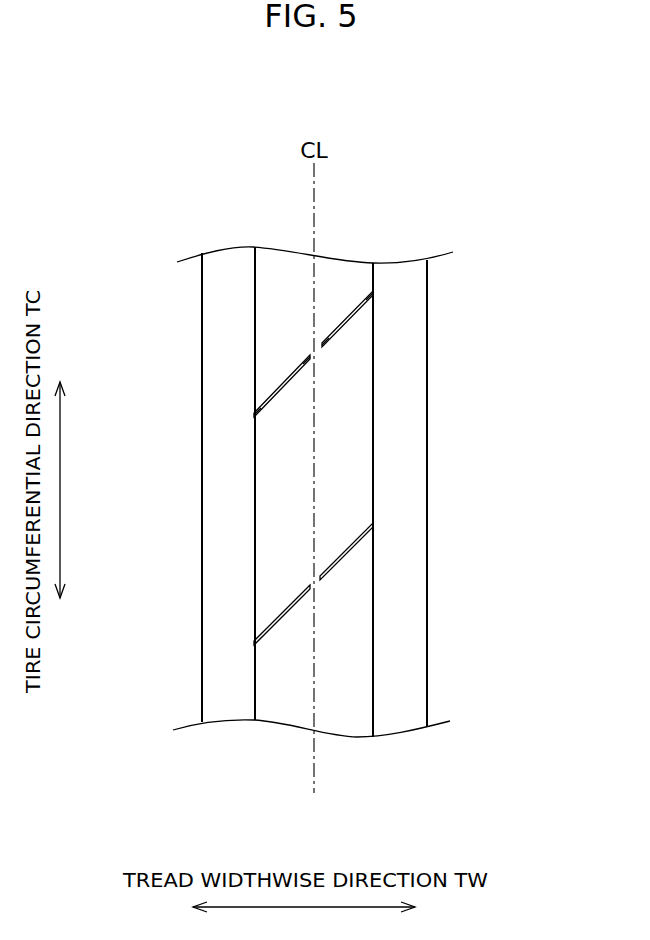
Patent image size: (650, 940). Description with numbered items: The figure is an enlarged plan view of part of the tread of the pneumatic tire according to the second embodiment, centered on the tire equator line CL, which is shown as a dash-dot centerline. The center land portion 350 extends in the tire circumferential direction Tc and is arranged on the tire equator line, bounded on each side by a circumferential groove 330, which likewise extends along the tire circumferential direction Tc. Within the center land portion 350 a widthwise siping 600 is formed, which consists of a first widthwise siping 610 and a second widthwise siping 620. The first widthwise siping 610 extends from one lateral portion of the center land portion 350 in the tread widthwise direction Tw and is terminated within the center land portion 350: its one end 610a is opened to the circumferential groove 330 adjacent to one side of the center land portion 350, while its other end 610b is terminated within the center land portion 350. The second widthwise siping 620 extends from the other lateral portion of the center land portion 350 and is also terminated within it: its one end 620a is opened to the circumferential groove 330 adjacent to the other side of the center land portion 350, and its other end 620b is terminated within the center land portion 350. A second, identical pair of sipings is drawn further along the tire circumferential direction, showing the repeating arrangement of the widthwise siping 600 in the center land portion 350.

The circumferential groove 330 is at (227, 258).
The center land portion 350 is at (357, 270).
The widthwise siping 600 is at (341, 451).
The first widthwise siping 610 is at (285, 388).
The second widthwise siping 620 is at (345, 327).
The one end of first widthwise siping 610a is at (257, 415).
The other end of first widthwise siping 610b is at (308, 357).
The one end of second widthwise siping 620a is at (372, 293).
The other end of second widthwise siping 620b is at (318, 338).